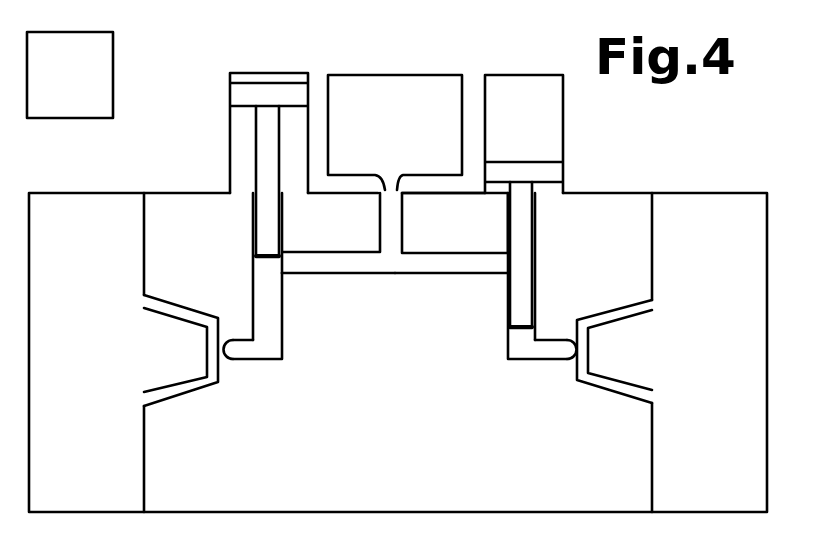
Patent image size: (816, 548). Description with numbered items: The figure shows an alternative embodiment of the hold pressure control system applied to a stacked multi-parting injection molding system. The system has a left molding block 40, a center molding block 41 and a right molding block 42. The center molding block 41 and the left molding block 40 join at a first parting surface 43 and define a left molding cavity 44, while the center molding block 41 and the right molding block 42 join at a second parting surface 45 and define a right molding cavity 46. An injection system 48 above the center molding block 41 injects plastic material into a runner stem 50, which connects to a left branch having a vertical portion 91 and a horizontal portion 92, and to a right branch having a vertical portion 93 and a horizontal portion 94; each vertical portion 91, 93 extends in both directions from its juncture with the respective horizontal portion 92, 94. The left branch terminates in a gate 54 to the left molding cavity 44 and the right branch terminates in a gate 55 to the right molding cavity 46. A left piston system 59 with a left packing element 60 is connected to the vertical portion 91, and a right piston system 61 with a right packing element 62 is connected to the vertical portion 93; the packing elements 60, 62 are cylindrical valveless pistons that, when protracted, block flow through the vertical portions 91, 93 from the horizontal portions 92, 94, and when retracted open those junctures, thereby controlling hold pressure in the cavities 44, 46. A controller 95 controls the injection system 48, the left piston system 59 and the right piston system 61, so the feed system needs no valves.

The left molding block 40 is at (95, 513).
The center molding block 41 is at (397, 513).
The right molding block 42 is at (712, 513).
The first parting surface 43 is at (145, 230).
The left molding cavity 44 is at (167, 306).
The second parting surface 45 is at (654, 251).
The right molding cavity 46 is at (623, 389).
The injection system 48 is at (113, 32).
The runner stem 50 is at (407, 220).
The gate 54 is at (218, 350).
The gate 55 is at (577, 350).
The left piston system 59 is at (113, 75).
The left packing element 60 is at (270, 223).
The right piston system 61 is at (113, 118).
The right packing element 62 is at (520, 297).
The vertical portion of the left branch 91 is at (282, 318).
The horizontal portion of the left branch 92 is at (330, 274).
The vertical portion of the right branch 93 is at (508, 333).
The horizontal portion of the right branch 94 is at (433, 274).
The controller 95 is at (63, 102).